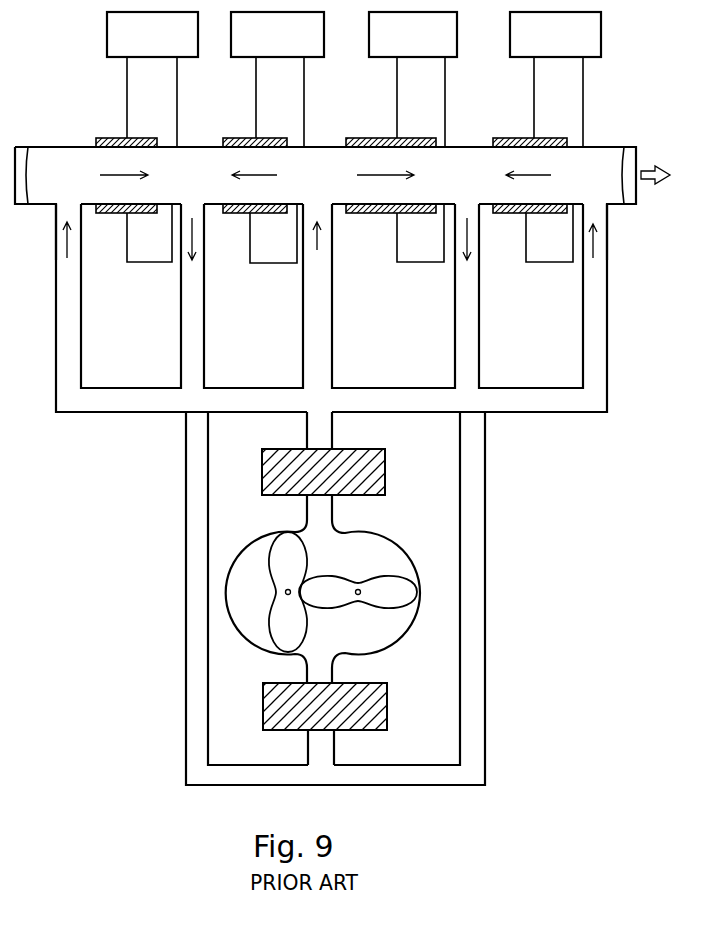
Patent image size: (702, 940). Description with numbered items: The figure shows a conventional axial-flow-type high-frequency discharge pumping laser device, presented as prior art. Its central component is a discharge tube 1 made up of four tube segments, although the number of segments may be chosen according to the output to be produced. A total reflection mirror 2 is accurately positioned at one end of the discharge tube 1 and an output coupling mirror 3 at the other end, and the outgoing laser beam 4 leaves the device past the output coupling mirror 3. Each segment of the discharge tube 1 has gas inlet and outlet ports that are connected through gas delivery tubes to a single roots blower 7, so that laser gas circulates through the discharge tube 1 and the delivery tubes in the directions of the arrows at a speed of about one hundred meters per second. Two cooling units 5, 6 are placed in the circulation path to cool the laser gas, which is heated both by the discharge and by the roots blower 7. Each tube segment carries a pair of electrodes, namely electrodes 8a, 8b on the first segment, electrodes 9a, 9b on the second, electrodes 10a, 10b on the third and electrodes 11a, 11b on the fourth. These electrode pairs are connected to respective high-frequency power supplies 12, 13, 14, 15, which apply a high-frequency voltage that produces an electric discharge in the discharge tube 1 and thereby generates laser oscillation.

The discharge tube 1 is at (57, 147).
The total reflection mirror 2 is at (22, 205).
The output coupling mirror 3 is at (629, 205).
The outgoing laser beam 4 is at (646, 166).
The cooling unit 5 is at (387, 470).
The cooling unit 6 is at (390, 706).
The roots blower 7 is at (420, 592).
The electrode 8a is at (123, 127).
The electrode 8b is at (131, 236).
The electrode 9a is at (252, 127).
The electrode 9b is at (252, 236).
The electrode 10a is at (388, 127).
The electrode 10b is at (390, 236).
The electrode 11a is at (525, 129).
The electrode 11b is at (528, 235).
The high-frequency power supply 12 is at (152, 79).
The high-frequency power supply 13 is at (277, 79).
The high-frequency power supply 14 is at (413, 79).
The high-frequency power supply 15 is at (555, 79).